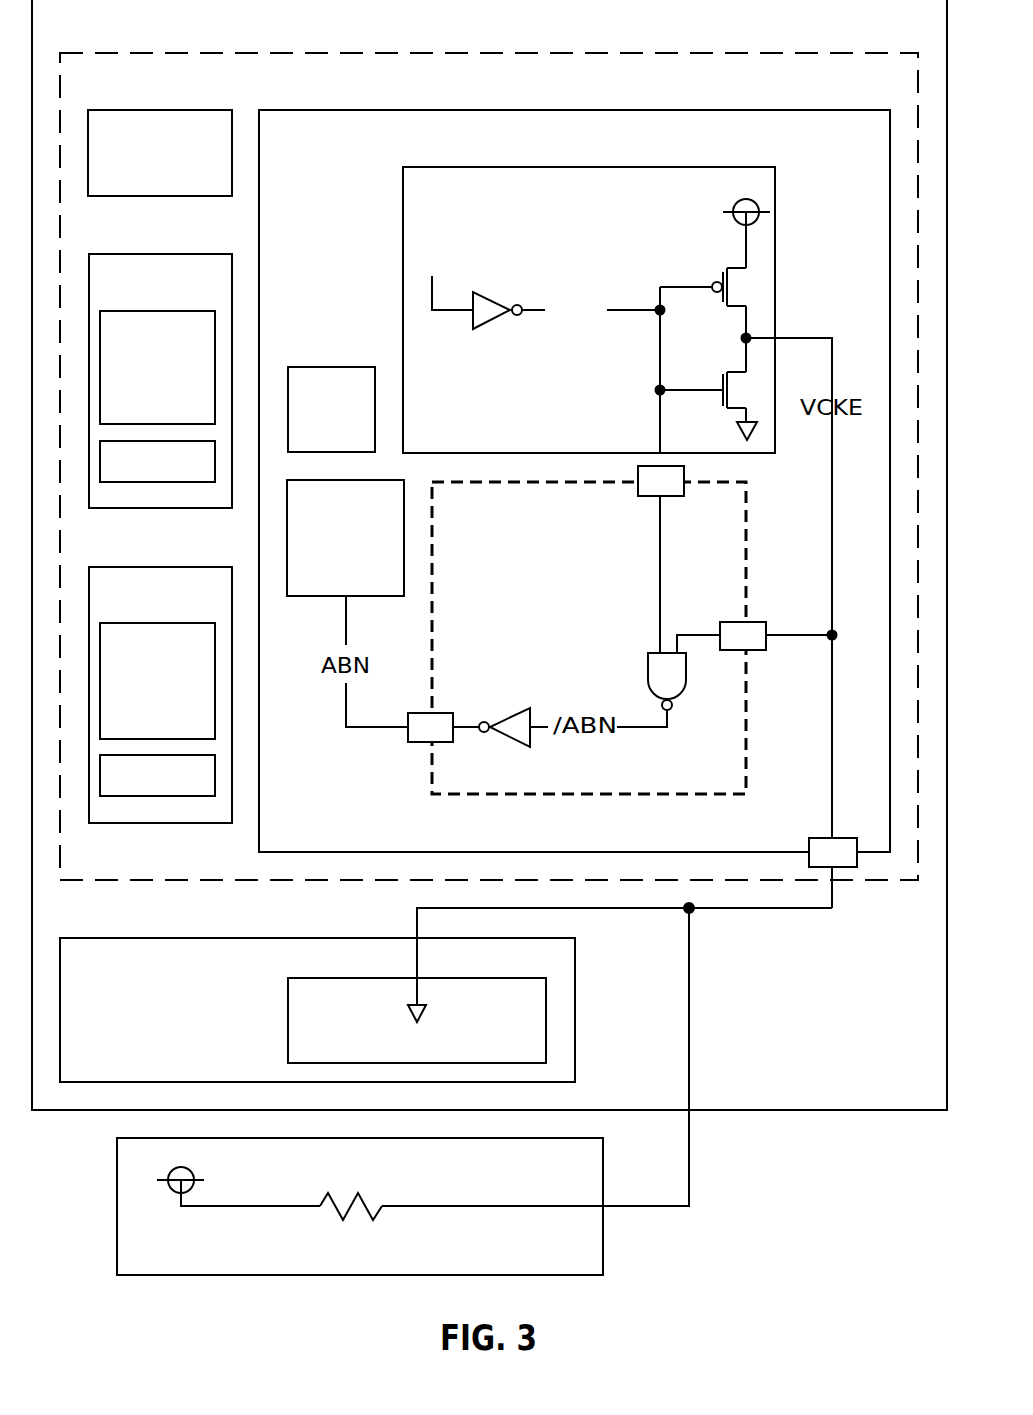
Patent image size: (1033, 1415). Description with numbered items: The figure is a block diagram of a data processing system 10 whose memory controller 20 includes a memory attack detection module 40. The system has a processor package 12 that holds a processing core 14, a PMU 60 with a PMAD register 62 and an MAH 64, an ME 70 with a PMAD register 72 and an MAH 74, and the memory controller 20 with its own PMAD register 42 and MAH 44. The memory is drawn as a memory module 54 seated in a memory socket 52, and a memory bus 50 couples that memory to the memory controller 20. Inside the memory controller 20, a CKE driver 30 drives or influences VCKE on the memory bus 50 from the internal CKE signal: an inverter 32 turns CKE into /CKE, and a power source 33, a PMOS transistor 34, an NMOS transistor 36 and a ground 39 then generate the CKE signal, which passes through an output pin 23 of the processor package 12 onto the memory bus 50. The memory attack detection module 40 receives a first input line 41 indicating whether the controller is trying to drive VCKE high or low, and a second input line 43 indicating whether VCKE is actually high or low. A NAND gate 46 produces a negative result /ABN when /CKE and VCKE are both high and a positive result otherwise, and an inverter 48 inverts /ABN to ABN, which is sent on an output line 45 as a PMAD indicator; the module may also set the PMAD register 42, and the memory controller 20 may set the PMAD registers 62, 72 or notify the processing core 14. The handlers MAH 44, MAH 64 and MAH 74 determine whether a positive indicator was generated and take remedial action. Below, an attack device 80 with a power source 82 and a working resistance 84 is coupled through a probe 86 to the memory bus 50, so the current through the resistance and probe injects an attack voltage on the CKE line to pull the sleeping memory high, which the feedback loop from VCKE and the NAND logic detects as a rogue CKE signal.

The data processing system 10 is at (642, 26).
The processor package 12 is at (613, 82).
The processing core 14 is at (207, 177).
The memory controller 20 is at (690, 141).
The output pin 23 is at (845, 866).
The CKE driver 30 is at (671, 197).
The inverter 32 is at (490, 352).
The power source 33 is at (703, 227).
The PMOS transistor 34 is at (698, 270).
The NMOS transistor 36 is at (712, 373).
The ground 39 is at (727, 426).
The memory attack detection module 40 is at (464, 569).
The first input line 41 is at (674, 494).
The PMAD register 42 is at (360, 580).
The second input line 43 is at (756, 647).
The memory attack handler 44 is at (345, 437).
The output line 45 is at (443, 739).
The NAND gate 46 is at (628, 670).
The inverter 48 is at (535, 760).
The memory bus 50 is at (802, 928).
The memory socket 52 is at (91, 999).
The memory module 54 is at (523, 1056).
The PMU 60 is at (207, 284).
The PMAD register 62 is at (170, 406).
The memory attack handler 64 is at (203, 472).
The ME 70 is at (198, 597).
The PMAD register 72 is at (170, 721).
The memory attack handler 74 is at (203, 787).
The attack device 80 is at (455, 1167).
The power source 82 is at (160, 1193).
The working resistance 84 is at (377, 1232).
The probe 86 is at (712, 955).